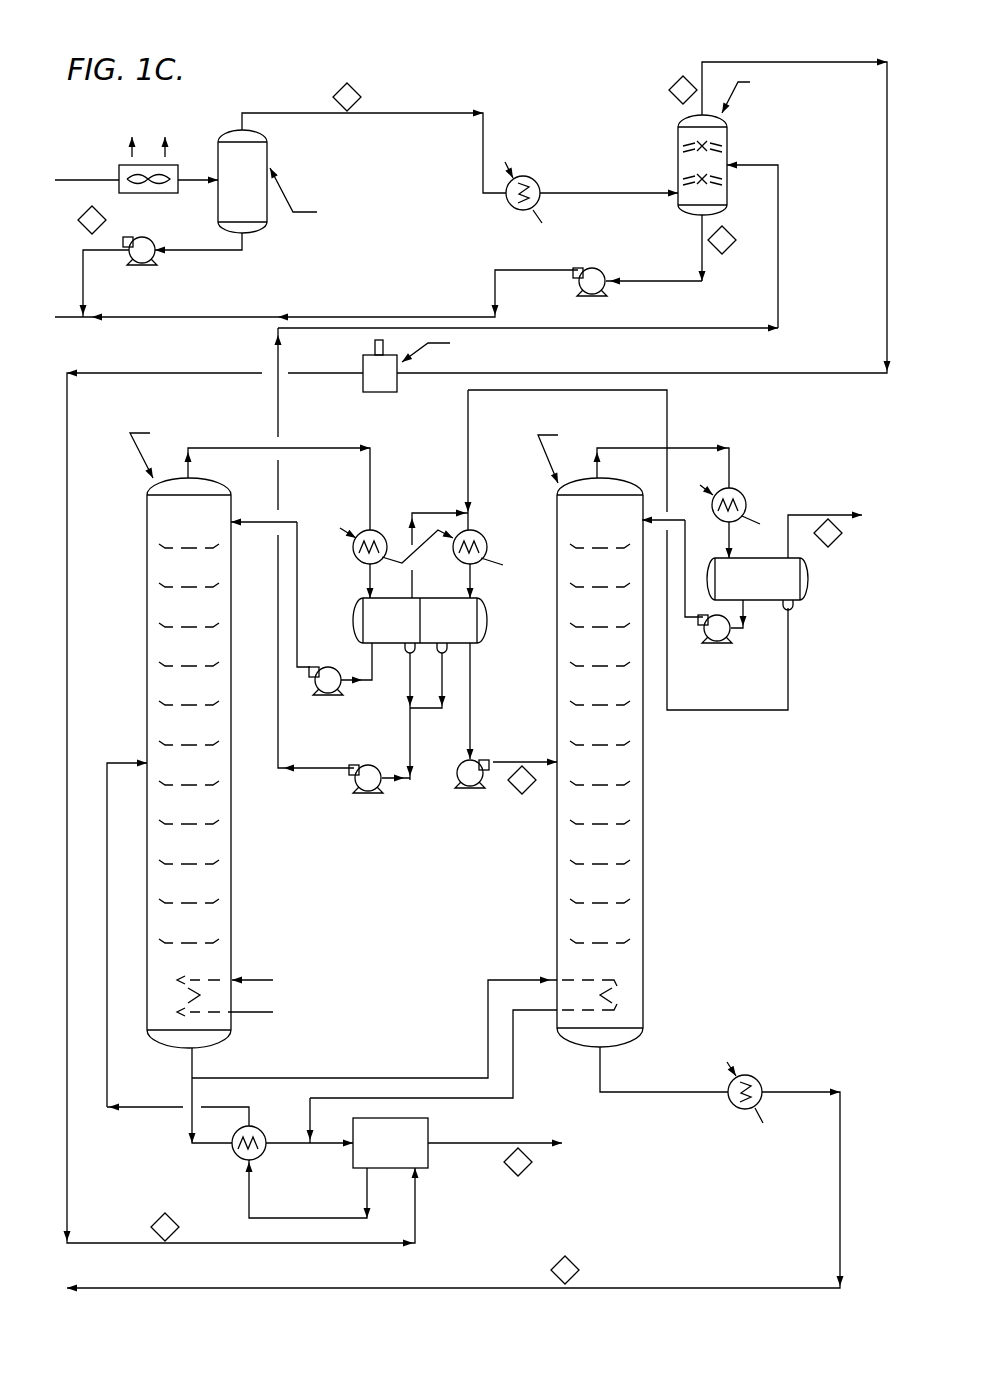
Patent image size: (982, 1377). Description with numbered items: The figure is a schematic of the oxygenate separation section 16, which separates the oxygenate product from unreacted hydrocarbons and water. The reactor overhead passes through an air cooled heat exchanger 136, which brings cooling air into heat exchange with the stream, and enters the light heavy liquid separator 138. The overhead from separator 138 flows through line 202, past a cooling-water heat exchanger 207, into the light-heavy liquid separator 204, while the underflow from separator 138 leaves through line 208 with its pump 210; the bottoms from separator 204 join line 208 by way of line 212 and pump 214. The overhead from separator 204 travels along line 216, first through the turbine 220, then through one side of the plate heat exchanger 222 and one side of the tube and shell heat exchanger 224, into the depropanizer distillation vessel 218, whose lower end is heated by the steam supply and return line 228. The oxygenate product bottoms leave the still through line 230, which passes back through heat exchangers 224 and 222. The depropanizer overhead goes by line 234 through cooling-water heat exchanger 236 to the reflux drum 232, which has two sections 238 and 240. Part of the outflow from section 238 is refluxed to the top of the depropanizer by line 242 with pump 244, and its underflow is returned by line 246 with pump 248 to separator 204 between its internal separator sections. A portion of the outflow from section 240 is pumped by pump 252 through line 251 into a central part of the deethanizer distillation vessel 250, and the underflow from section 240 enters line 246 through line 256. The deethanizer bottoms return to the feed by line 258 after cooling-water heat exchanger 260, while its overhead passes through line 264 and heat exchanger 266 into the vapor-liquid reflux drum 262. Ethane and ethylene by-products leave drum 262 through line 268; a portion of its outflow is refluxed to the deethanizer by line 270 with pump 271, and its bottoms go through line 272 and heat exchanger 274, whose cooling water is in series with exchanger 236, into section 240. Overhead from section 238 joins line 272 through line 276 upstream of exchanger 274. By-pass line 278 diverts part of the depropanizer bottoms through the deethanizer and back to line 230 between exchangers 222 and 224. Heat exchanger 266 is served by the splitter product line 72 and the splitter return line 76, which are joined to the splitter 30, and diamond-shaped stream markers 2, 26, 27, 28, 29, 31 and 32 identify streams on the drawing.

The oxygenate separation section 16 is at (528, 98).
The air cooled heat exchanger 136 is at (150, 193).
The light heavy liquid separator 138 is at (268, 150).
The line 202 is at (256, 113).
The light-heavy liquid separator 204 is at (678, 140).
The heat exchanger 207 is at (534, 177).
The line 208 is at (216, 250).
The pump 210 is at (152, 256).
The line 212 is at (347, 317).
The pump 214 is at (578, 290).
The line 216 is at (652, 372).
The depropanizer distillation vessel 218 is at (147, 577).
The turbine 220 is at (363, 365).
The plate heat exchanger 222 is at (353, 1165).
The tube and shell heat exchanger 224 is at (238, 1157).
The steam supply and return line 228 is at (258, 975).
The line 230 is at (190, 1062).
The reflux drum 232 is at (482, 650).
The line 234 is at (292, 448).
The heat exchanger 236 is at (354, 546).
The reflux drum section 238 is at (353, 620).
The reflux drum section 240 is at (487, 620).
The line 242 is at (297, 534).
The pump 244 is at (317, 682).
The line 246 is at (778, 263).
The pump 248 is at (368, 795).
The deethanizer distillation vessel 250 is at (642, 790).
The line 251 is at (475, 700).
The pump 252 is at (457, 776).
The line 256 is at (447, 680).
The line 258 is at (447, 1288).
The heat exchanger 260 is at (764, 1080).
The vapor-liquid reflux drum 262 is at (810, 580).
The line 264 is at (617, 448).
The heat exchanger 266 is at (738, 490).
The line 268 is at (797, 518).
The line 270 is at (673, 612).
The pump 271 is at (722, 630).
The line 272 is at (468, 435).
The heat exchanger 274 is at (478, 530).
The line 276 is at (433, 510).
The by-pass line 278 is at (350, 1060).
The line 72 is at (757, 516).
The line 76 is at (707, 500).
The stream 2 is at (565, 1270).
The stream 26 is at (347, 97).
The stream 27 is at (92, 220).
The stream 28 is at (424, 658).
The stream 29 is at (722, 240).
The splitter tower 30 is at (518, 1162).
The stream 31 is at (522, 780).
The stream 32 is at (828, 533).